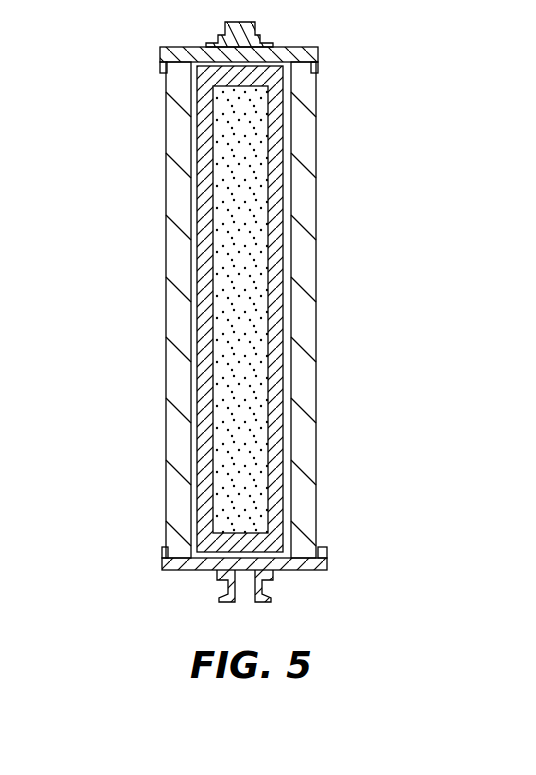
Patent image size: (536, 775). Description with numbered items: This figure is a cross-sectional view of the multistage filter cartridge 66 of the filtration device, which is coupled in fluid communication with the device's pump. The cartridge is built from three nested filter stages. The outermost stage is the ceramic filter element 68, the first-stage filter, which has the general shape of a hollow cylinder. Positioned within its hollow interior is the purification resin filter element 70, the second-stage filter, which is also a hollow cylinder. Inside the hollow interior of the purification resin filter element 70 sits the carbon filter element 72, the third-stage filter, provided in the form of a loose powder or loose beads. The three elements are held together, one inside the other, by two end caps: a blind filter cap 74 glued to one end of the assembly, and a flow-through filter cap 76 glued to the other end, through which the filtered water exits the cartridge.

The multistage filter cartridge 66 is at (150, 309).
The ceramic filter element 68 is at (166, 433).
The purification resin filter element 70 is at (283, 150).
The carbon filter element 72 is at (262, 298).
The blind filter cap 74 is at (303, 47).
The flow-through filter cap 76 is at (219, 581).